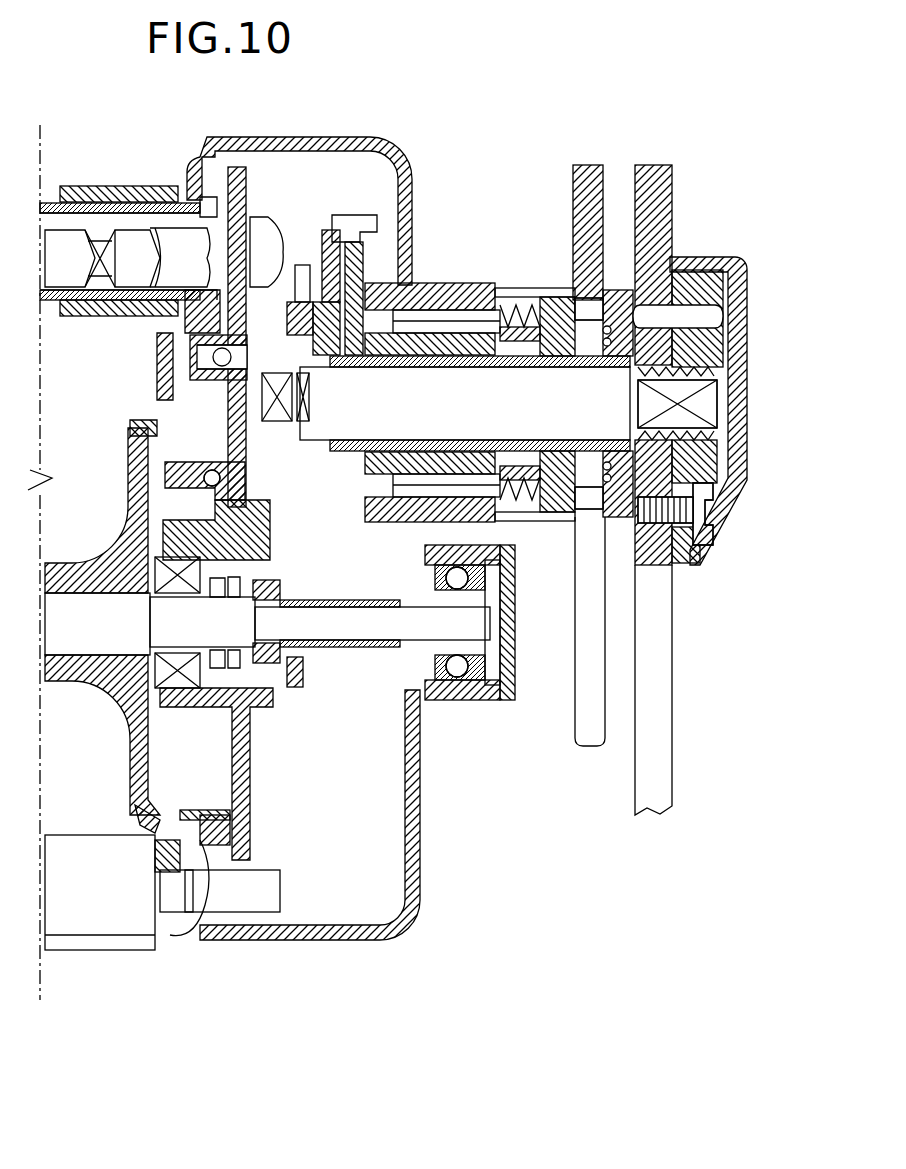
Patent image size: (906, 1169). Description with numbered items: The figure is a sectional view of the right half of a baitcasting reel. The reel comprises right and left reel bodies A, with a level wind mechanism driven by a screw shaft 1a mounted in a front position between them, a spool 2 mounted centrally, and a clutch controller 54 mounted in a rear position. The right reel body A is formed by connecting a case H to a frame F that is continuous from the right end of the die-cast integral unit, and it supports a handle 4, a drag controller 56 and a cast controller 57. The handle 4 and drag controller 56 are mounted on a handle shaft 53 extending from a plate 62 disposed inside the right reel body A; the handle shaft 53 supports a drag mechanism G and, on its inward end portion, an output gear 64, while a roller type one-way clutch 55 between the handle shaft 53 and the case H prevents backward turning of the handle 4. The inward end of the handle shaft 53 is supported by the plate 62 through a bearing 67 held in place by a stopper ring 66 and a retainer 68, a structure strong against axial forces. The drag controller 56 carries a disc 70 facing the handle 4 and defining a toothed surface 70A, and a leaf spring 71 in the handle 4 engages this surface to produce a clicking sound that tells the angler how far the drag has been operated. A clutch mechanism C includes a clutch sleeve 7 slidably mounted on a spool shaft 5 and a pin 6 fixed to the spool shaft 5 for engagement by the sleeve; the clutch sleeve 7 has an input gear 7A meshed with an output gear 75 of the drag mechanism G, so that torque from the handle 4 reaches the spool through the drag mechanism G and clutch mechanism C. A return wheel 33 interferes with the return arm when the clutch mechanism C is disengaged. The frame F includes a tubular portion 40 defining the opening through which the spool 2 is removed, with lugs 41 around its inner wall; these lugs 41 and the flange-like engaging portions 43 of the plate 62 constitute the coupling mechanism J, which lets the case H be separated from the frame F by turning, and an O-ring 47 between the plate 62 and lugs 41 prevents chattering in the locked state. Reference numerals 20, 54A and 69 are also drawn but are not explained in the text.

The screw shaft 1a is at (60, 245).
The spool 2 is at (65, 690).
The handle 4 is at (672, 796).
The spool shaft 5 is at (86, 612).
The pin 6 is at (255, 682).
The clutch sleeve 7 is at (290, 682).
The input gear 7A is at (410, 700).
The pin 20 is at (303, 680).
The return wheel 33 is at (303, 327).
The tubular portion 40 is at (158, 830).
The lugs 41 is at (200, 925).
The engaging portions 43 is at (150, 822).
The O-ring 47 is at (240, 840).
The handle shaft 53 is at (465, 403).
The clutch controller 54 is at (105, 950).
The piston rod 54A is at (265, 895).
The roller type one-way clutch 55 is at (445, 325).
The drag controller 56 is at (592, 748).
The cast controller 57 is at (495, 705).
The plate 62 is at (232, 735).
The output gear 64 is at (275, 327).
The stopper ring 66 is at (195, 365).
The bearing 67 is at (133, 428).
The retainer 68 is at (213, 498).
The washer 69 is at (588, 298).
The disc 70 is at (612, 302).
The toothed surface 70A is at (703, 492).
The leaf spring 71 is at (697, 312).
The output gear 75 is at (358, 215).
The drag mechanism G is at (390, 255).
The coupling mechanism J is at (178, 784).
The clutch mechanism C is at (262, 790).
The frame F is at (225, 950).
The case H is at (295, 950).
The reel body A is at (328, 1020).